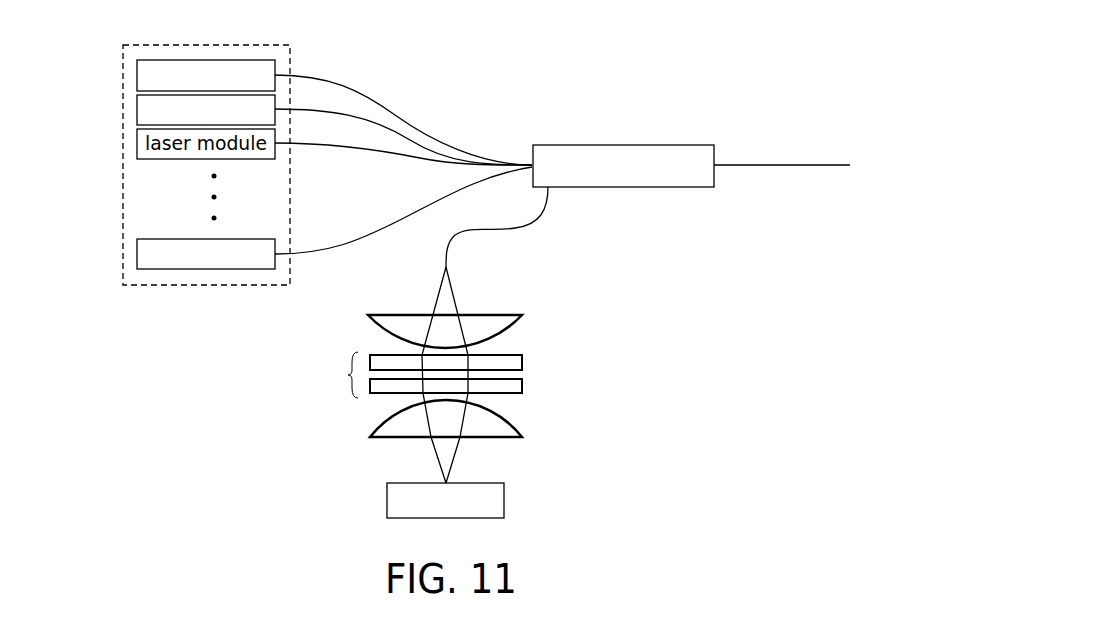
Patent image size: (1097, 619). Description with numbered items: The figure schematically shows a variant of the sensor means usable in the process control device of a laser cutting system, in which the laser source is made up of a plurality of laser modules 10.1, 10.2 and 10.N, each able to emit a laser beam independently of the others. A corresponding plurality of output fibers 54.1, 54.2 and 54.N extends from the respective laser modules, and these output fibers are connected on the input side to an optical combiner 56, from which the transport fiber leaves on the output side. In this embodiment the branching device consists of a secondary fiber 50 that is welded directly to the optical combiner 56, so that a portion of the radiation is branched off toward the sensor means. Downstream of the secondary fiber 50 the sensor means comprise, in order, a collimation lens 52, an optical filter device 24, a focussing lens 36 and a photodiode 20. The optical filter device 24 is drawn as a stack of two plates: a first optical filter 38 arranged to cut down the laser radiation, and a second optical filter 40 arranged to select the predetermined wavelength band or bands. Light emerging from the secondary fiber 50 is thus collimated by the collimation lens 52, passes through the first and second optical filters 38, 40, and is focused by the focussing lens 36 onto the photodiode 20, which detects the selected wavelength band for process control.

The laser module 10.1 is at (137, 80).
The laser module 10.2 is at (137, 115).
The laser module 10.N is at (137, 255).
The output fiber 54.1 is at (373, 97).
The output fiber 54.2 is at (418, 148).
The output fiber 54.N is at (311, 255).
The optical combiner 56 is at (586, 145).
The secondary fiber 50 is at (540, 226).
The collimation lens 52 is at (512, 330).
The optical filter device 24 is at (460, 361).
The first optical filter 38 is at (522, 362).
The second optical filter 40 is at (522, 388).
The focussing lens 36 is at (522, 418).
The photodiode 20 is at (504, 502).